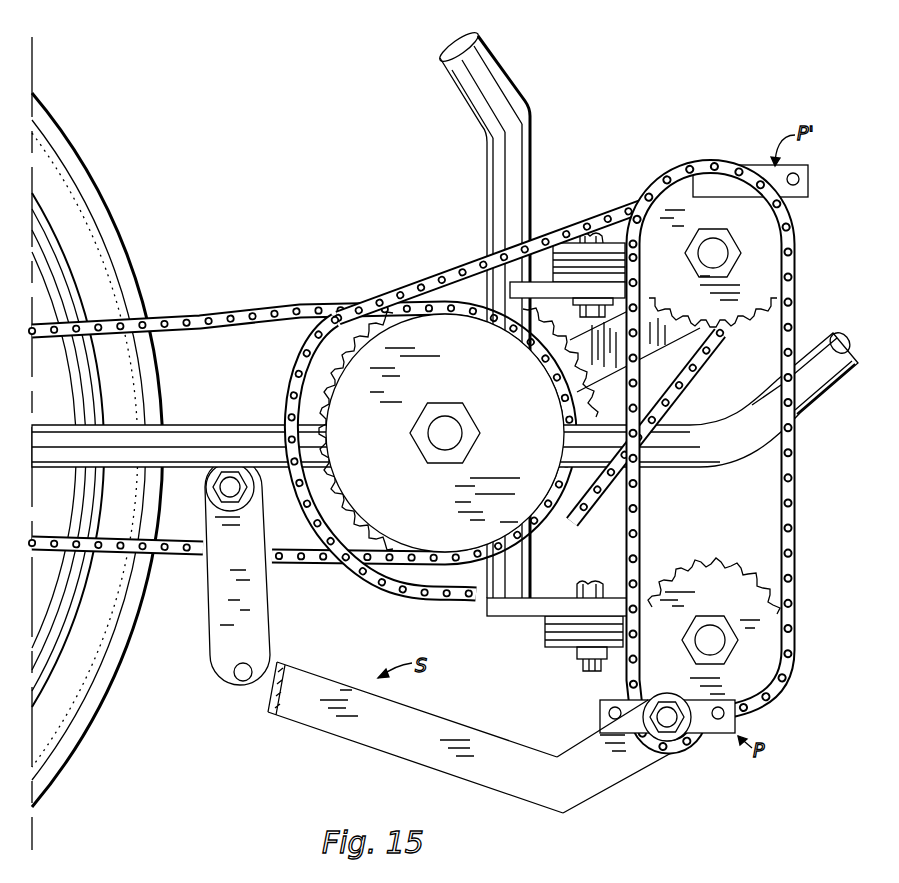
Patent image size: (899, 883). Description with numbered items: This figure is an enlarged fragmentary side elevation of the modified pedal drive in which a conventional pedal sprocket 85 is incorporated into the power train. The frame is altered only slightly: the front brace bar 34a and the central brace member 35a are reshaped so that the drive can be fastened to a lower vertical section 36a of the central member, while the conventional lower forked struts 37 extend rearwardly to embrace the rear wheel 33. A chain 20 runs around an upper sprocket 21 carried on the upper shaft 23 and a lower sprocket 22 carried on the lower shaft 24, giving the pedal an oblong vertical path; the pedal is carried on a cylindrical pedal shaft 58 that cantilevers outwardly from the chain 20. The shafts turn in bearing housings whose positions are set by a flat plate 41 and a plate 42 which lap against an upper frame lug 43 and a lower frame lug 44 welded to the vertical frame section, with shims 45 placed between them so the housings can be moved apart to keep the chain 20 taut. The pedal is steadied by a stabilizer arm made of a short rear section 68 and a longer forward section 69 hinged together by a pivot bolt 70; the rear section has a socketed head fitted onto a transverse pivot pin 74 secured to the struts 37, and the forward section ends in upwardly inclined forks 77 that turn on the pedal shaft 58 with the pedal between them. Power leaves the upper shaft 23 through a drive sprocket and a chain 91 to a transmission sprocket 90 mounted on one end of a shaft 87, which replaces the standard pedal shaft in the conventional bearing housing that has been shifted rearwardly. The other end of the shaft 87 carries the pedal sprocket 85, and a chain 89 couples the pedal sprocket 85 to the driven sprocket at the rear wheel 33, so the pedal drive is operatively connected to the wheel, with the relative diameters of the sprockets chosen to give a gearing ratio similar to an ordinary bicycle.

The chain 20 is at (790, 472).
The upper sprocket 21 is at (768, 272).
The lower sprocket 22 is at (700, 575).
The upper shaft 23 is at (716, 252).
The lower shaft 24 is at (712, 633).
The rear wheel 33 is at (77, 200).
The front brace bar 34a is at (813, 387).
The central brace member 35a is at (497, 78).
The lower vertical section 36a is at (513, 166).
The lower forked struts 37 is at (232, 440).
The flat plate 41 is at (573, 250).
The plate 42 is at (558, 645).
The upper frame lug 43 is at (520, 287).
The lower frame lug 44 is at (515, 612).
The shims 45 is at (613, 268).
The pedal shaft 58 is at (667, 722).
The rear section 68 is at (217, 632).
The forward section 69 is at (343, 732).
The pivot bolt 70 is at (233, 683).
The pivot pin 74 is at (230, 487).
The forks 77 is at (612, 765).
The pedal sprocket 85 is at (503, 383).
The shaft 87 is at (452, 433).
The chain 89 is at (246, 302).
The transmission sprocket 90 is at (298, 372).
The chain 91 is at (430, 268).